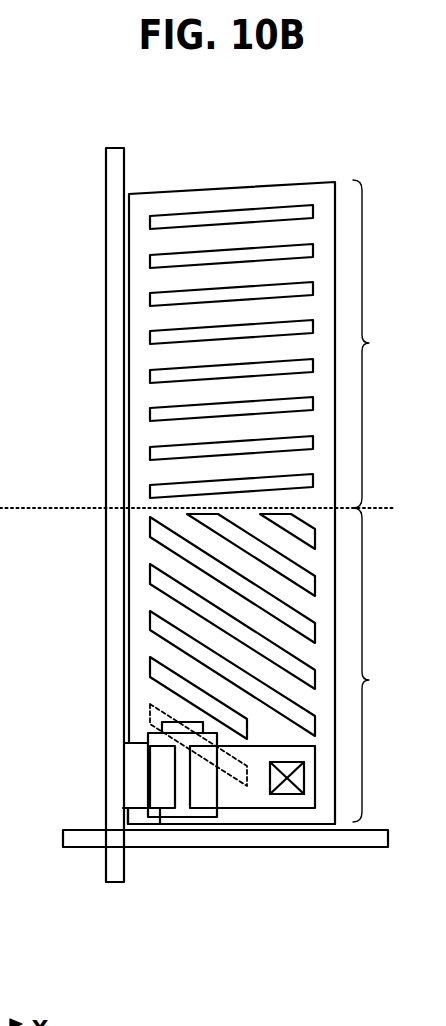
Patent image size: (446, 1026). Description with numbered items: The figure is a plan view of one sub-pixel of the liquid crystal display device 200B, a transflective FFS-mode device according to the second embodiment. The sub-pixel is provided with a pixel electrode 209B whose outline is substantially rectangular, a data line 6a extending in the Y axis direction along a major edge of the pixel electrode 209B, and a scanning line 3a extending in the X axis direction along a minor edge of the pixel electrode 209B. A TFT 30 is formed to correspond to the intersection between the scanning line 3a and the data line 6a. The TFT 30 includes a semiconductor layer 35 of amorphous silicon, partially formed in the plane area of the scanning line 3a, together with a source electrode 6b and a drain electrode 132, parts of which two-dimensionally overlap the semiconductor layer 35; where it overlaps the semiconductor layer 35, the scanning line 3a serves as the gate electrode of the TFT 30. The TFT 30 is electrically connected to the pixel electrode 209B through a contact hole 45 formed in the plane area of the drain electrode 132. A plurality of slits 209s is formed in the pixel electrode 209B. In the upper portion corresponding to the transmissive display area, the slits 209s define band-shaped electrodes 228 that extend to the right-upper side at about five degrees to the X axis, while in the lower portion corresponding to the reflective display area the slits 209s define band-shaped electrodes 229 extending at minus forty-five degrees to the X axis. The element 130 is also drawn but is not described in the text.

The liquid crystal display device 200B is at (301, 172).
The pixel electrode 209B is at (181, 198).
The band-shaped electrodes 228 is at (185, 285).
The slits 209s is at (170, 417).
The band-shaped electrodes 229 is at (192, 578).
The hidden slit 130 is at (150, 707).
The drain electrode 132 is at (257, 812).
The contact hole 45 is at (292, 800).
The semiconductor layer 35 is at (163, 826).
The TFT 30 is at (205, 850).
The data line 6a is at (106, 205).
The source electrode 6b is at (147, 766).
The scanning line 3a is at (376, 846).